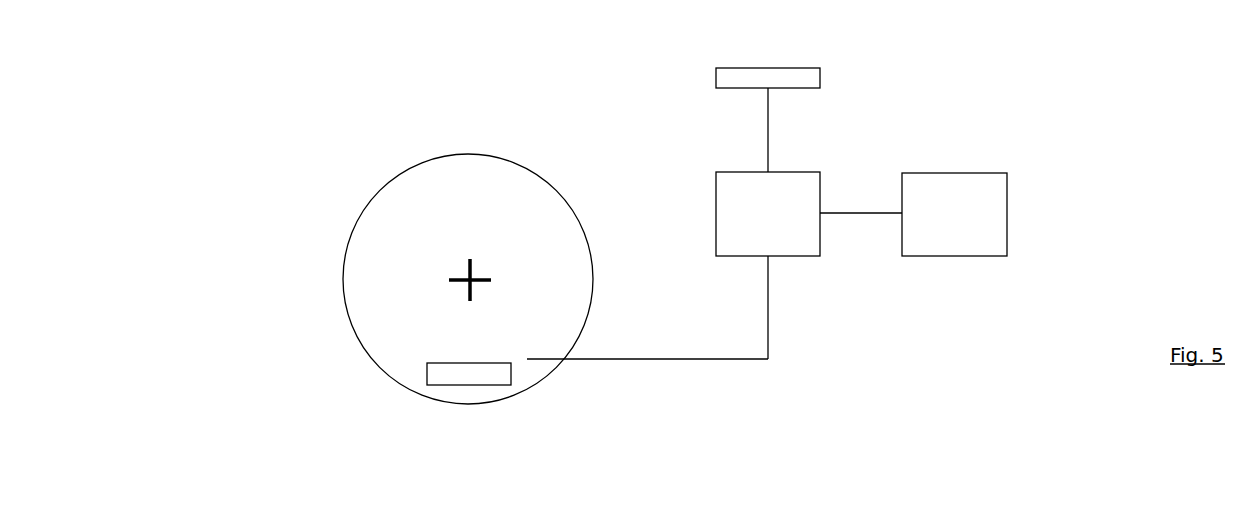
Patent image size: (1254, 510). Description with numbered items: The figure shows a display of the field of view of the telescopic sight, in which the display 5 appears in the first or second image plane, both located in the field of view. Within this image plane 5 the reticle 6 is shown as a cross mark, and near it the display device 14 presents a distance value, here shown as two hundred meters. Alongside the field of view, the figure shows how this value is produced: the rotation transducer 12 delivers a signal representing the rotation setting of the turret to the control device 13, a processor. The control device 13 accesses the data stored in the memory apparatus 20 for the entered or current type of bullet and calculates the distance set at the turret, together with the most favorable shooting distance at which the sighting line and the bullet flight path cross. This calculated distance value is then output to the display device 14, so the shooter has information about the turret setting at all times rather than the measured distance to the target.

The first image plane 5 is at (367, 250).
The reticle 6 is at (466, 276).
The rotation transducer 12 is at (802, 80).
The control device 13 is at (788, 207).
The display device 14 is at (437, 373).
The memory apparatus 20 is at (951, 215).